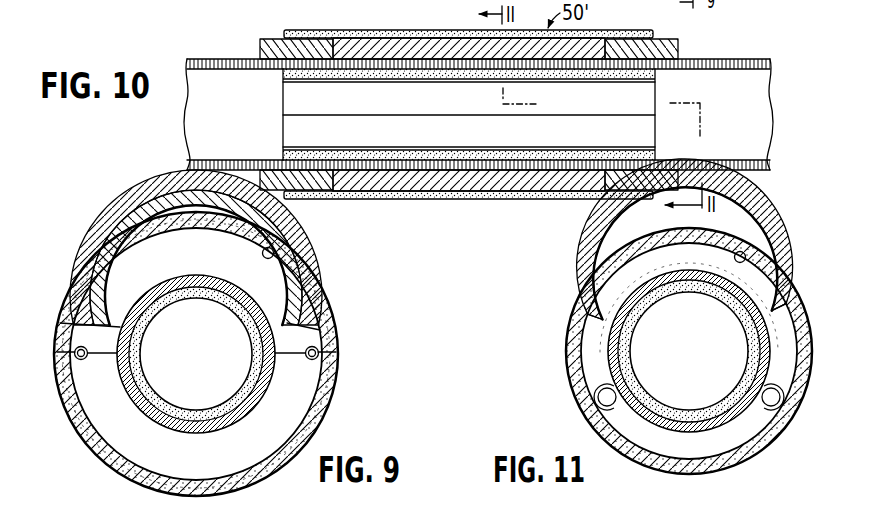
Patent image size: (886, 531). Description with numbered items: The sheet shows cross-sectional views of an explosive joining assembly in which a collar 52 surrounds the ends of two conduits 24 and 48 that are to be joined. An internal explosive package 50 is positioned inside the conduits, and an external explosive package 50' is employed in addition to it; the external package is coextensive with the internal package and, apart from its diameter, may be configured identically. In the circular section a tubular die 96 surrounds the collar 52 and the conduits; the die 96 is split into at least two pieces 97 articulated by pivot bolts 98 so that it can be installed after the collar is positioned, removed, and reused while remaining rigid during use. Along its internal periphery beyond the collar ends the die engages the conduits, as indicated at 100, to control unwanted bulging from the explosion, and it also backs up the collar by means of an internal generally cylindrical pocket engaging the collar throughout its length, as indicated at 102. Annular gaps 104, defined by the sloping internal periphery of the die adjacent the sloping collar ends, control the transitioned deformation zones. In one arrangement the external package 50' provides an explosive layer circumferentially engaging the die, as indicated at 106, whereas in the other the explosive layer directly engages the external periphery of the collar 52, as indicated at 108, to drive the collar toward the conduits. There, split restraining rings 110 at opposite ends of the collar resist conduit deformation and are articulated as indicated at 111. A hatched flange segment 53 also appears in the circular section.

In FIG. 10, the conduit 24 is at (217, 56).
In FIG. 10, the conduit 48 is at (741, 56).
In FIG. 9, the conduit 48 is at (254, 407).
In FIG. 10, the internal explosive package 50 is at (447, 114).
In FIG. 9, the internal explosive package 50 is at (196, 354).
In FIG. 11, the internal explosive package 50 is at (689, 351).
In FIG. 9, the external explosive package 50' is at (196, 340).
In FIG. 11, the external explosive package 50' is at (670, 351).
In FIG. 10, the collar 52 is at (385, 39).
In FIG. 11, the collar 52 is at (771, 312).
In FIG. 9, the flange segment 53 is at (270, 290).
In FIG. 9, the tubular die 96 is at (97, 452).
In FIG. 9, the die pieces 97 is at (85, 333).
In FIG. 9, the pivot bolts 98 is at (319, 348).
In FIG. 10, the engagement of die with conduits 100 is at (283, 75).
In FIG. 9, the engagement of die with conduits 100 is at (208, 440).
In FIG. 11, the engagement of die with conduits 100 is at (716, 428).
In FIG. 9, the internal cylindrical pocket 102 is at (177, 242).
In FIG. 11, the internal cylindrical pocket 102 is at (781, 268).
In FIG. 10, the annular gaps 104 is at (326, 54).
In FIG. 9, the explosive layer engaging die 106 is at (263, 257).
In FIG. 10, the explosive layer engaging collar 108 is at (428, 42).
In FIG. 11, the explosive layer engaging collar 108 is at (738, 265).
In FIG. 10, the split restraining rings 110 is at (271, 38).
In FIG. 11, the split restraining rings 110 is at (781, 338).
In FIG. 11, the ring articulation 111 is at (597, 398).